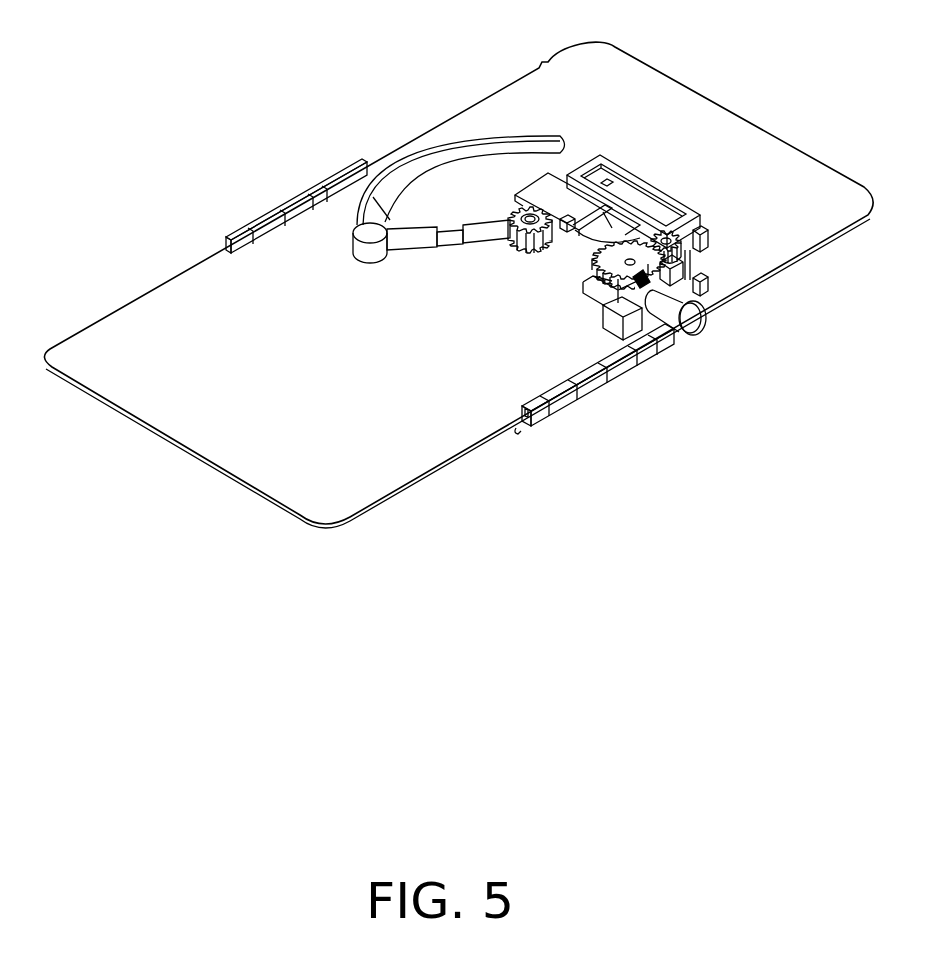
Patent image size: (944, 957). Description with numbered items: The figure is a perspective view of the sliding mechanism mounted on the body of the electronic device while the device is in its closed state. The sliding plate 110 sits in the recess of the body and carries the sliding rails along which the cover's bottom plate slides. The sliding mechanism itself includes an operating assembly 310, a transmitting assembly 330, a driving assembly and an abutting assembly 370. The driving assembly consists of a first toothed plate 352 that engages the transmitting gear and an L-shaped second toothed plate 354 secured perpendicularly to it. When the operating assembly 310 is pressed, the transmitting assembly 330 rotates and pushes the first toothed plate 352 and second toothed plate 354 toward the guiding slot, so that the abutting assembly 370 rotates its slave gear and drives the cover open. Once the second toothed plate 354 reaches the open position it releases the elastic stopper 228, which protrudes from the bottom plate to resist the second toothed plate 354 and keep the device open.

The sliding plate 110 is at (295, 203).
The stopper 228 is at (610, 227).
The operating assembly 310 is at (695, 322).
The transmitting assembly 330 is at (578, 270).
The first toothed plate 352 is at (677, 227).
The second toothed plate 354 is at (548, 192).
The abutting assembly 370 is at (424, 235).